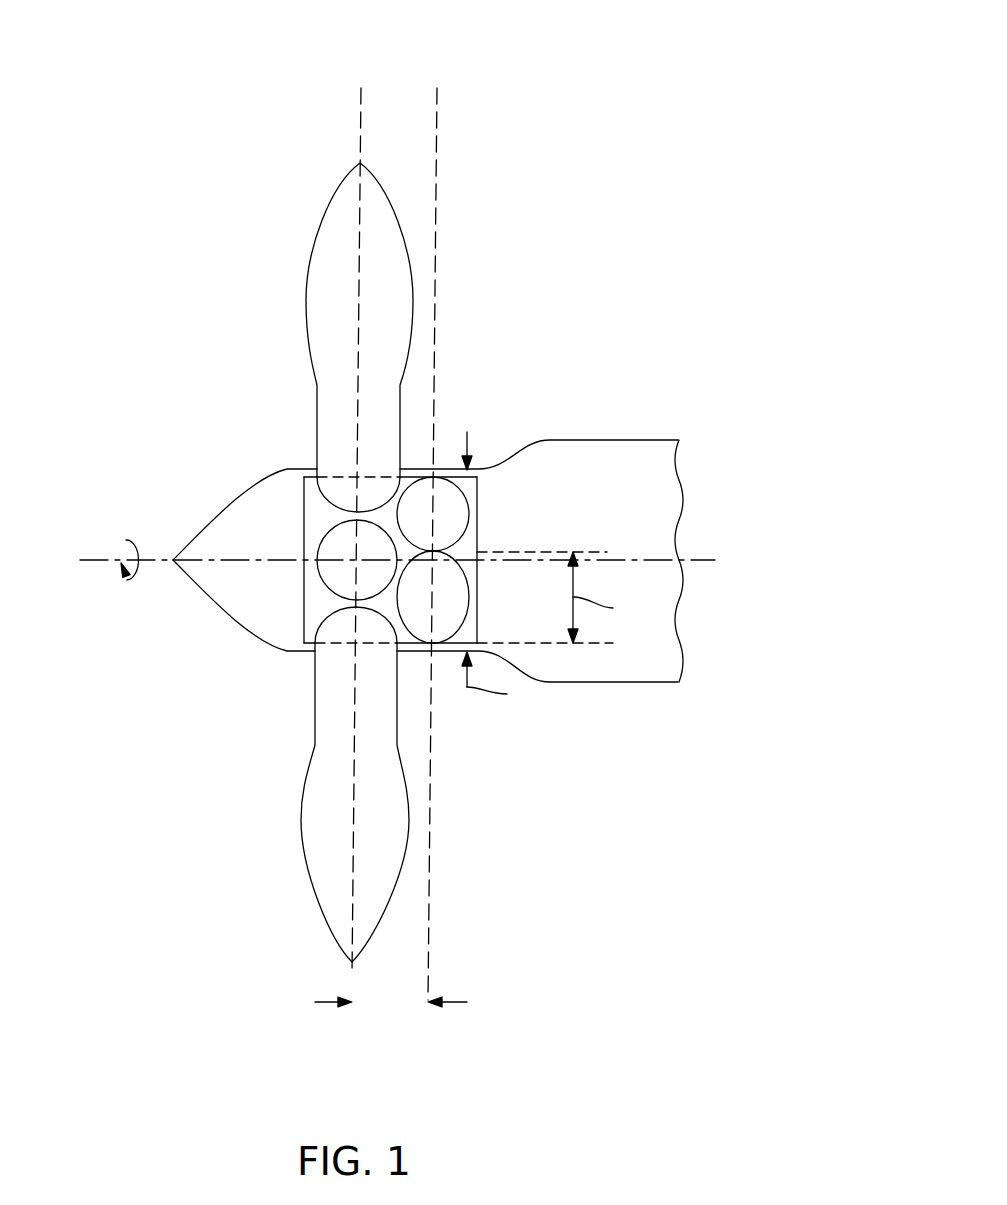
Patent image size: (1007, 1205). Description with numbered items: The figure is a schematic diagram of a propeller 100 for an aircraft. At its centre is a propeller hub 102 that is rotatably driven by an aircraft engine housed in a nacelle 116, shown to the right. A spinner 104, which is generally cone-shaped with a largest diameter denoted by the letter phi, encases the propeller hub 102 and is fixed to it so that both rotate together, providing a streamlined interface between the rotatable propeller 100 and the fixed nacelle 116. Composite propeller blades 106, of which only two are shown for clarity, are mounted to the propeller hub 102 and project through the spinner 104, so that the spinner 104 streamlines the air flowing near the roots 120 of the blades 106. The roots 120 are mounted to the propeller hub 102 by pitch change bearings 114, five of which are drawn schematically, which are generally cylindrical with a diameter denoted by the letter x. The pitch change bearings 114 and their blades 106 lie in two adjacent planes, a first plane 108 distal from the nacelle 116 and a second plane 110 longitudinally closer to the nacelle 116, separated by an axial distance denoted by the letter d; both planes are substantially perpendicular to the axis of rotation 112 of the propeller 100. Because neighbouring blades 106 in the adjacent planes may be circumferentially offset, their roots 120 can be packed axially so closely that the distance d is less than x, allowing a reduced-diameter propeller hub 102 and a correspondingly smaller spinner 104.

The propeller 100 is at (602, 41).
The propeller hub 102 is at (317, 526).
The spinner 104 is at (203, 608).
The composite propeller blades 106 is at (316, 250).
The first plane 108 is at (360, 110).
The second plane 110 is at (437, 110).
The axis of rotation 112 is at (92, 560).
The pitch change bearings 114 is at (306, 451).
The nacelle 116 is at (618, 452).
The roots 120 is at (407, 447).